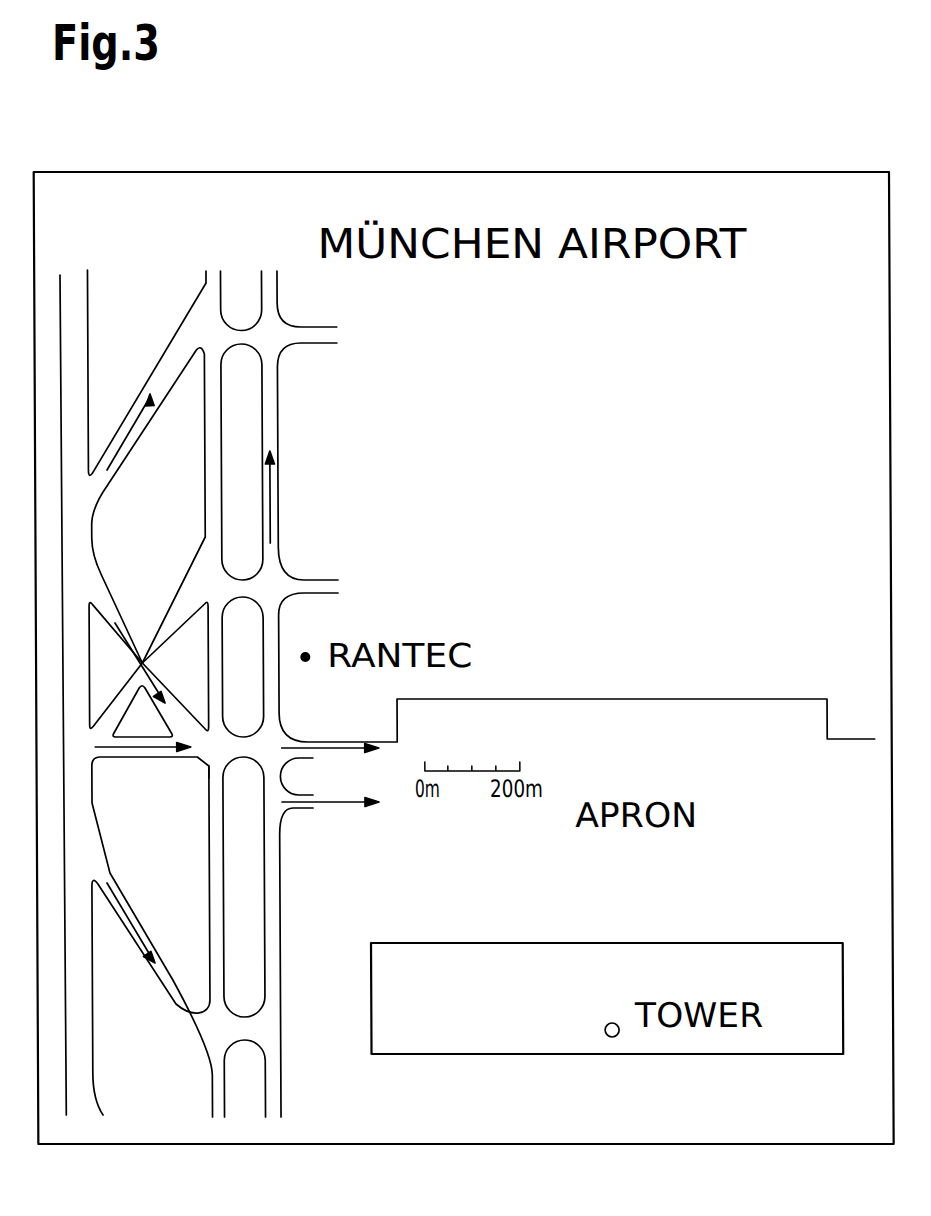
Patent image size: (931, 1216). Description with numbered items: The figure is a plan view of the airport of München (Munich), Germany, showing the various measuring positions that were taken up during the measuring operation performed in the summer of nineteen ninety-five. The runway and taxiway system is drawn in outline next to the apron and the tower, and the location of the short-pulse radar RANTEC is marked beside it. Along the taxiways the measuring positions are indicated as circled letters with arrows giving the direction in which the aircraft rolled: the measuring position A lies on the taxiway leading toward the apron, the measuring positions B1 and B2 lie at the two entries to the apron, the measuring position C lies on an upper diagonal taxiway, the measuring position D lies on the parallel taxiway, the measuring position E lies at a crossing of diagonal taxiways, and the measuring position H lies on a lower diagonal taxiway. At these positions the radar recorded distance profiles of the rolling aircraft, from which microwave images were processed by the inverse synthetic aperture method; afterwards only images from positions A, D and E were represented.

The measuring position A is at (143, 747).
The measuring position B1 is at (330, 748).
The measuring position B2 is at (330, 802).
The measuring position C is at (131, 432).
The measuring position D is at (268, 497).
The measuring position E is at (140, 663).
The measuring position H is at (131, 923).